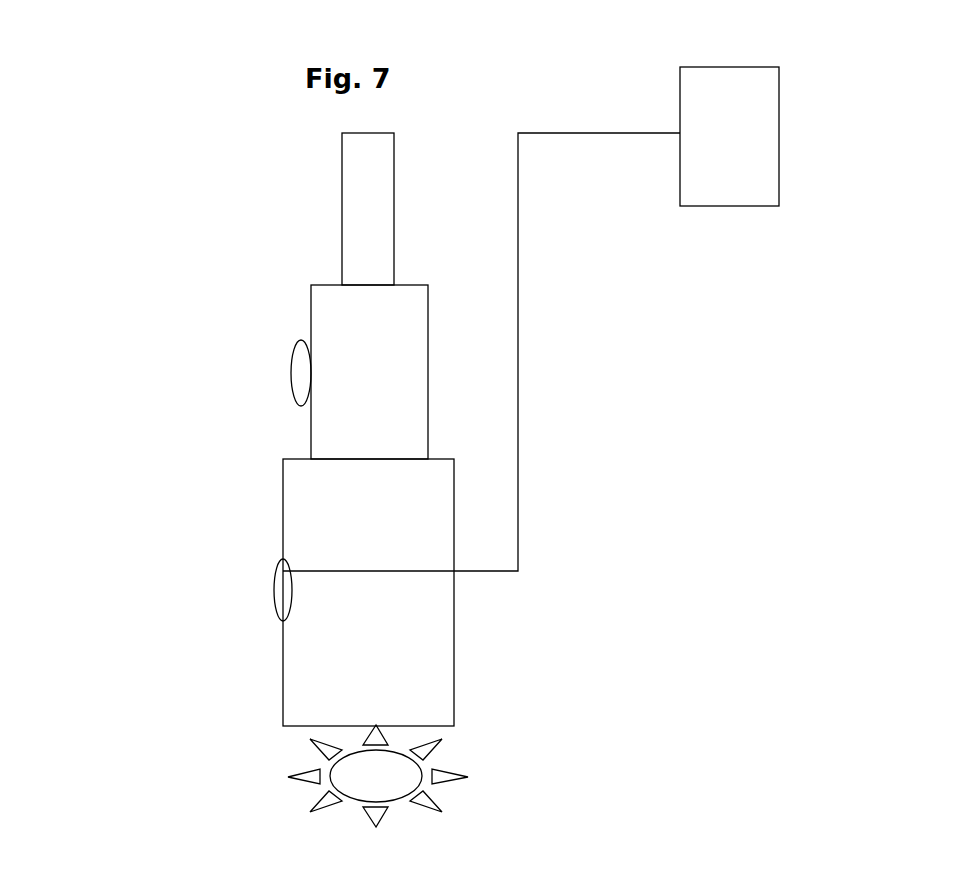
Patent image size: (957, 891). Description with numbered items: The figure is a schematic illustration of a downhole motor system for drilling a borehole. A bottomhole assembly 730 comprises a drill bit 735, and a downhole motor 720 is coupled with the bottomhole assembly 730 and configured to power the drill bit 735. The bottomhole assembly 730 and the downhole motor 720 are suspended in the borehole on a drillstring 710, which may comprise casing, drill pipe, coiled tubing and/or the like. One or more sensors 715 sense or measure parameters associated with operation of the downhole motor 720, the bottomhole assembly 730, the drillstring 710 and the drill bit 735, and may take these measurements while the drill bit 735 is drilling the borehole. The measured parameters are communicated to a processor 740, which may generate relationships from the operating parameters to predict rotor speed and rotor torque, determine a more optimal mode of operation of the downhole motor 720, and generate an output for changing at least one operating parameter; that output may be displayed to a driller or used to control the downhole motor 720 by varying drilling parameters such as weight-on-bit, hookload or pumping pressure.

The drillstring 710 is at (342, 222).
The sensors 715 is at (290, 368).
The downhole motor 720 is at (428, 357).
The bottomhole assembly 730 is at (454, 585).
The drill bit 735 is at (300, 777).
The processor 740 is at (722, 206).